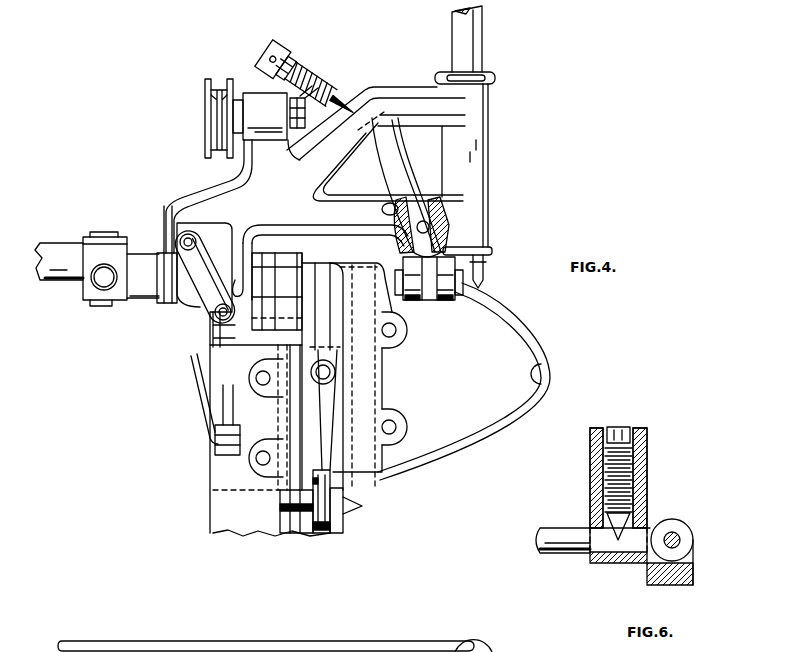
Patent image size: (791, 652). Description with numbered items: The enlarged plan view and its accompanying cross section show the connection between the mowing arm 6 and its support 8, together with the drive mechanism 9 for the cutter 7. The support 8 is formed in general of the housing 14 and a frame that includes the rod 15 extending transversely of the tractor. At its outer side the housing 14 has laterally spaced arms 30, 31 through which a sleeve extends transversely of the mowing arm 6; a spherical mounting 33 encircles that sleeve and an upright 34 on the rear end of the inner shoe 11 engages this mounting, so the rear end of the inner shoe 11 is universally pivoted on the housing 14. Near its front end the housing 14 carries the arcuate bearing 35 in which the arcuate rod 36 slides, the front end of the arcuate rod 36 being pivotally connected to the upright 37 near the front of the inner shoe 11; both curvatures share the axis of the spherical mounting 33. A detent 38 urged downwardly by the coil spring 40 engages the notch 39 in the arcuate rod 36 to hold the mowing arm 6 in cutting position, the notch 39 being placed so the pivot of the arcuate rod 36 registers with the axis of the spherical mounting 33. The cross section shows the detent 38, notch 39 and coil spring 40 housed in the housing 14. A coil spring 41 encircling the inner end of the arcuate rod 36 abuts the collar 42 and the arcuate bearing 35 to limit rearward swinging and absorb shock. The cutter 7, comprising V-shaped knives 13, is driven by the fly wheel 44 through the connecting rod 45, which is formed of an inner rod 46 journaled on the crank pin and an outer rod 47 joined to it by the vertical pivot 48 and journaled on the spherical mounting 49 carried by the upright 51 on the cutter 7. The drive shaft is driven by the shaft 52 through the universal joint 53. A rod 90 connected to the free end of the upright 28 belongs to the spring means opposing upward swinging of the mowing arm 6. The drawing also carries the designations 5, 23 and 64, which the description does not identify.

In FIG. 4, the coupling assembly 5 is at (149, 382).
In FIG. 4, the mowing arm 6 is at (411, 184).
In FIG. 4, the cutter 7 is at (352, 519).
In FIG. 4, the support 8 is at (497, 118).
In FIG. 4, the drive mechanism 9 is at (44, 289).
In FIG. 4, the inner shoe 11 is at (527, 335).
In FIG. 4, the V-shaped knives 13 is at (362, 506).
In FIG. 4, the housing 14 is at (472, 163).
In FIG. 4, the rod 15 is at (483, 52).
In FIG. 4, the pulley 23 is at (211, 116).
In FIG. 4, the upright 28 is at (220, 448).
In FIG. 4, the arm 30 is at (165, 304).
In FIG. 4, the arm 31 is at (239, 285).
In FIG. 4, the spherical mounting 33 is at (182, 277).
In FIG. 4, the upright 34 is at (213, 297).
In FIG. 4, the arcuate bearing 35 is at (396, 212).
In FIG. 4, the arcuate rod 36 is at (392, 147).
In FIG. 6, the arcuate rod 36 is at (548, 546).
In FIG. 4, the upright 37 is at (447, 265).
In FIG. 6, the upright 37 is at (693, 570).
In FIG. 6, the detent 38 is at (602, 525).
In FIG. 4, the notch 39 is at (432, 222).
In FIG. 6, the notch 39 is at (606, 540).
In FIG. 6, the coil spring 40 is at (631, 478).
In FIG. 4, the coil spring 41 is at (327, 76).
In FIG. 4, the collar 42 is at (284, 50).
In FIG. 4, the fly wheel 44 is at (292, 262).
In FIG. 4, the connecting rod 45 is at (331, 357).
In FIG. 4, the inner rod 46 is at (383, 325).
In FIG. 4, the outer rod 47 is at (323, 418).
In FIG. 4, the vertical pivot 48 is at (332, 372).
In FIG. 4, the spherical mounting 49 is at (312, 534).
In FIG. 4, the upright 51 is at (287, 534).
In FIG. 4, the shaft 52 is at (43, 250).
In FIG. 4, the universal joint 53 is at (103, 281).
In FIG. 4, the rod 64 is at (366, 643).
In FIG. 4, the rod 90 is at (193, 394).